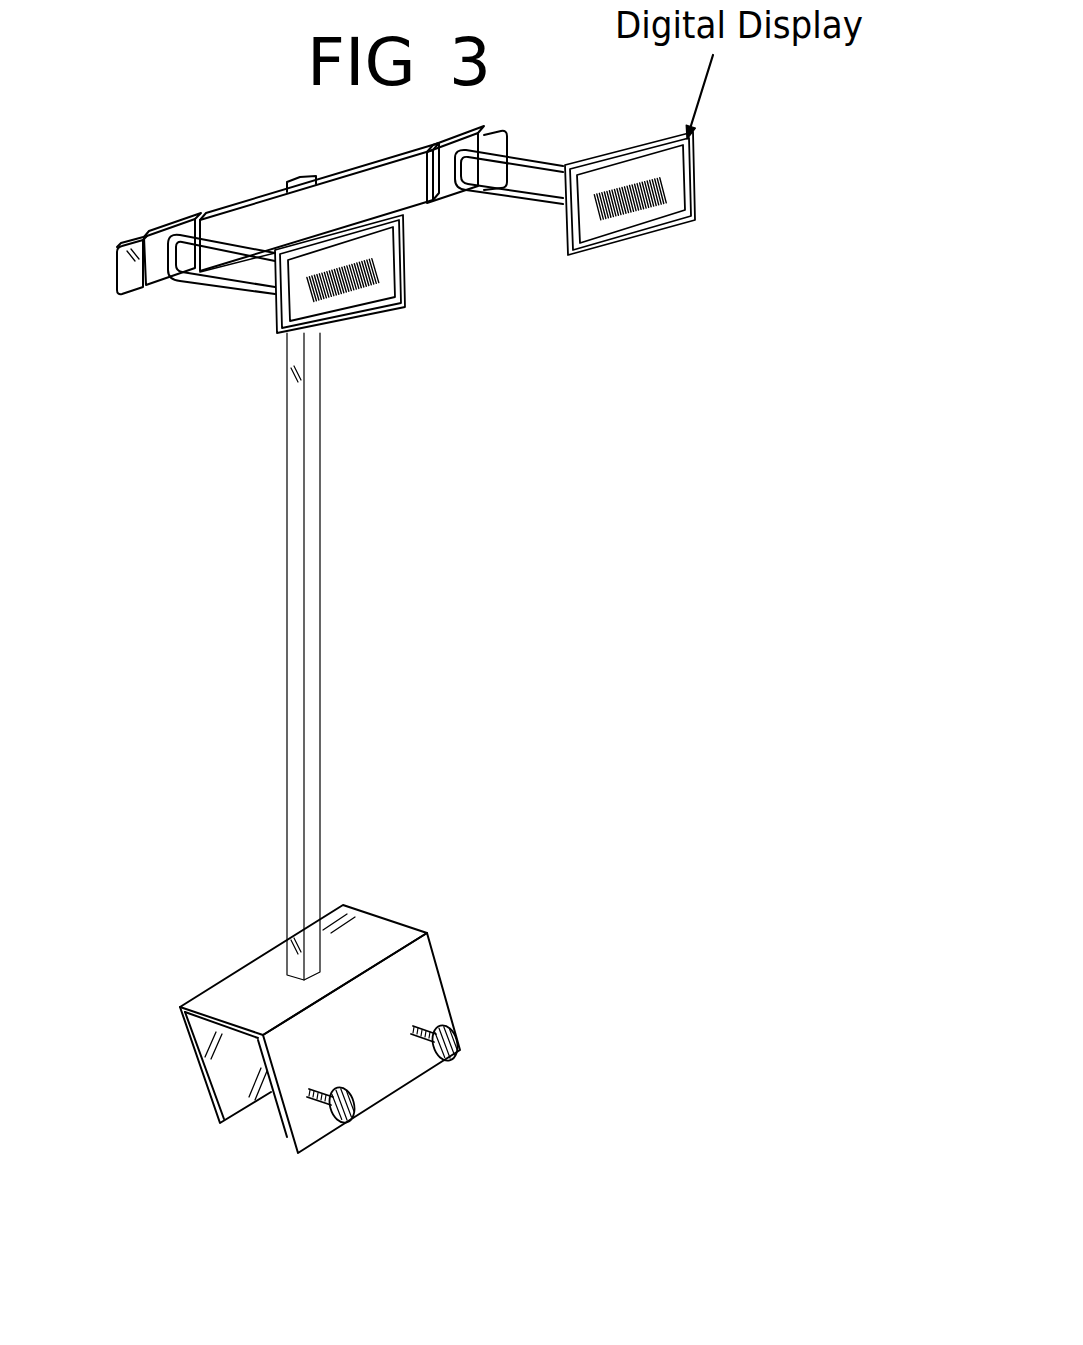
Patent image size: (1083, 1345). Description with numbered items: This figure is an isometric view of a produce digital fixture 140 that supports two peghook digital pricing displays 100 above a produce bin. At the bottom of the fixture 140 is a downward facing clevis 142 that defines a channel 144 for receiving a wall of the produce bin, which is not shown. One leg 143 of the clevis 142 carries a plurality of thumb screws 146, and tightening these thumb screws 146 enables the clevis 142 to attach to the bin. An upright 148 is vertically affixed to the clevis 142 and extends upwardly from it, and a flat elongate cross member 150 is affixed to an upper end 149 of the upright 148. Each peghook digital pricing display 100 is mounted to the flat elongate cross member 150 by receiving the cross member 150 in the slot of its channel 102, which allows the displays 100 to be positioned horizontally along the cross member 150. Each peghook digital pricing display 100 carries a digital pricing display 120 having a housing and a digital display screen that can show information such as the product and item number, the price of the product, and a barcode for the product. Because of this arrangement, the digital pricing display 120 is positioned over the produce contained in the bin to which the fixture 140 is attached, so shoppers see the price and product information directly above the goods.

The peghook digital pricing display 100 is at (229, 292).
The channel 102 is at (164, 226).
The digital pricing display 120 is at (367, 322).
The produce digital fixture 140 is at (285, 656).
The downward facing clevis 142 is at (367, 1048).
The leg 143 is at (286, 1136).
The channel 144 is at (255, 1113).
The thumb screws 146 is at (450, 1027).
The upright 148 is at (323, 655).
The upper end 149 is at (288, 180).
The flat elongate cross member 150 is at (243, 207).